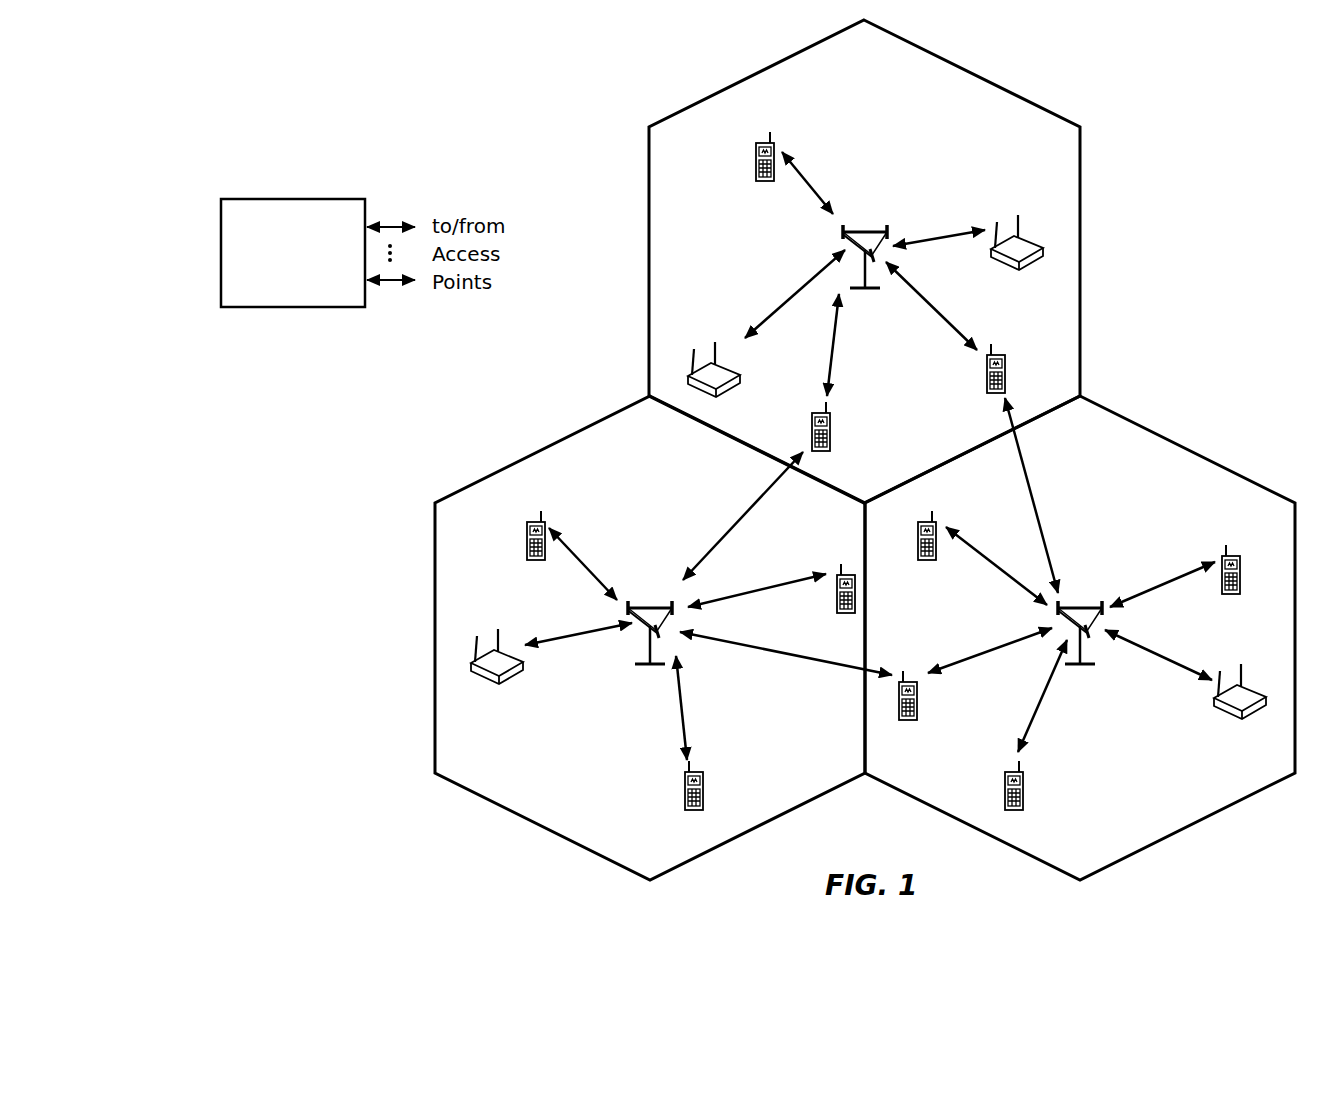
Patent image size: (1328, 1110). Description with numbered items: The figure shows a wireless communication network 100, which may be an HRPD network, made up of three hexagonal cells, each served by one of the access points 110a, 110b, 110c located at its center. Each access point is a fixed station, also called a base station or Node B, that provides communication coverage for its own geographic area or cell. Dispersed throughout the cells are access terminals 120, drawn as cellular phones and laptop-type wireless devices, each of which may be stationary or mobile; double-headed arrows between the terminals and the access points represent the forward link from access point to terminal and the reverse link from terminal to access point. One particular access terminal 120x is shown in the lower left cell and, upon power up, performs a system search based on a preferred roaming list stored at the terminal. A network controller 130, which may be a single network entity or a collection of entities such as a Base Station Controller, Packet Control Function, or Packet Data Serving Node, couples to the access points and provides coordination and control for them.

The wireless communication network 100 is at (1232, 86).
The access point 110a is at (652, 607).
The access point 110b is at (1083, 607).
The access point 110c is at (865, 231).
The access terminal 120 is at (756, 152).
The access terminal 120x is at (837, 602).
The network controller 130 is at (297, 191).